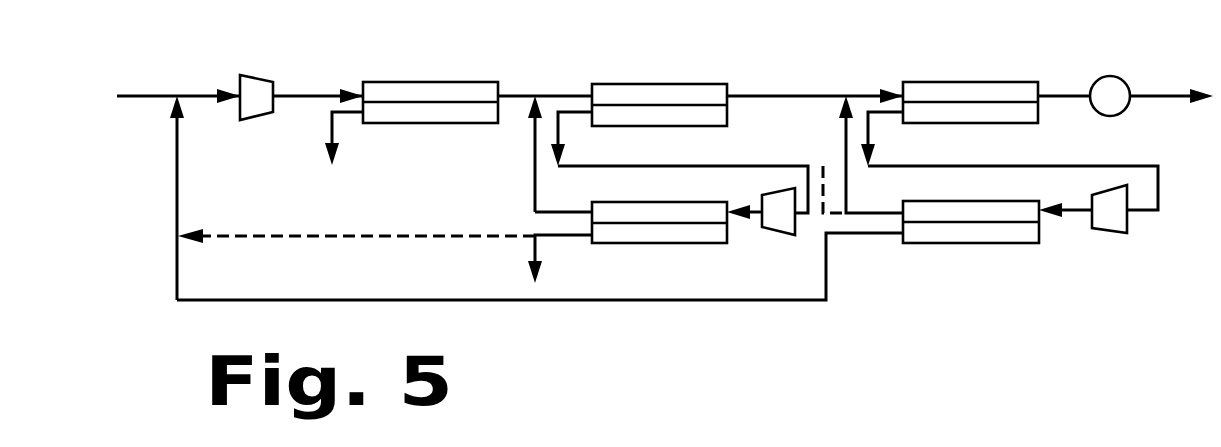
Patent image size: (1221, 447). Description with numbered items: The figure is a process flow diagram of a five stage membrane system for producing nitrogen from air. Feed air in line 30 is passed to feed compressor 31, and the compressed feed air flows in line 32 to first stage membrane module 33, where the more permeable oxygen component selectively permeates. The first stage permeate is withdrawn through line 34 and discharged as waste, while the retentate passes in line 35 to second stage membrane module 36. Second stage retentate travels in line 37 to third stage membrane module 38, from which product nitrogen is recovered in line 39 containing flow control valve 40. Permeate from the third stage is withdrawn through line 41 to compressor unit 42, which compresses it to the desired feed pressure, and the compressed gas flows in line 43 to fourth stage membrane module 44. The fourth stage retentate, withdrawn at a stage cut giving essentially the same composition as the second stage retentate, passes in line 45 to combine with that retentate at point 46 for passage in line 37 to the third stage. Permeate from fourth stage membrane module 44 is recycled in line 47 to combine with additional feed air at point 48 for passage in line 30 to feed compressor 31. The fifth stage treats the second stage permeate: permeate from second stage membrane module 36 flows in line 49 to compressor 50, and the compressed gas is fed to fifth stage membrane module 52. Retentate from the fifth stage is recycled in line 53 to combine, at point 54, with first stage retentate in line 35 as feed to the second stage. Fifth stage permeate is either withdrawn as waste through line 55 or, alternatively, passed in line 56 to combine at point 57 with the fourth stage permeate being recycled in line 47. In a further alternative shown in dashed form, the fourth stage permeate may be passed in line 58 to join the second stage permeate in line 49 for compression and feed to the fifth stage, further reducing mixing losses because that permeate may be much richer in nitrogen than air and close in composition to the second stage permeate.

The feed air line 30 is at (166, 96).
The feed compressor 31 is at (255, 76).
The compressed feed air line 32 is at (300, 95).
The first stage membrane module 33 is at (420, 82).
The first stage permeate line 34 is at (331, 122).
The first stage retentate line 35 is at (521, 95).
The second stage membrane module 36 is at (672, 84).
The second stage retentate line 37 is at (798, 96).
The third stage membrane module 38 is at (968, 82).
The product nitrogen line 39 is at (1162, 95).
The flow control valve 40 is at (1118, 76).
The third stage permeate line 41 is at (1160, 183).
The compressor unit 42 is at (1105, 232).
The compressed third stage permeate line 43 is at (1072, 212).
The fourth stage membrane module 44 is at (925, 243).
The fourth stage retentate line 45 is at (848, 183).
The combining point 46 is at (840, 98).
The fourth stage permeate line 47 is at (703, 300).
The feed combining point 48 is at (175, 99).
The second stage permeate line 49 is at (682, 167).
The compressor 50 is at (796, 227).
The fifth stage membrane module 52 is at (648, 243).
The fifth stage retentate line 53 is at (533, 163).
The combining point 54 is at (540, 88).
The fifth stage permeate waste line 55 is at (532, 250).
The fifth stage permeate recycle line 56 is at (312, 238).
The combining point 57 is at (180, 233).
The fourth stage permeate bypass line 58 is at (814, 163).